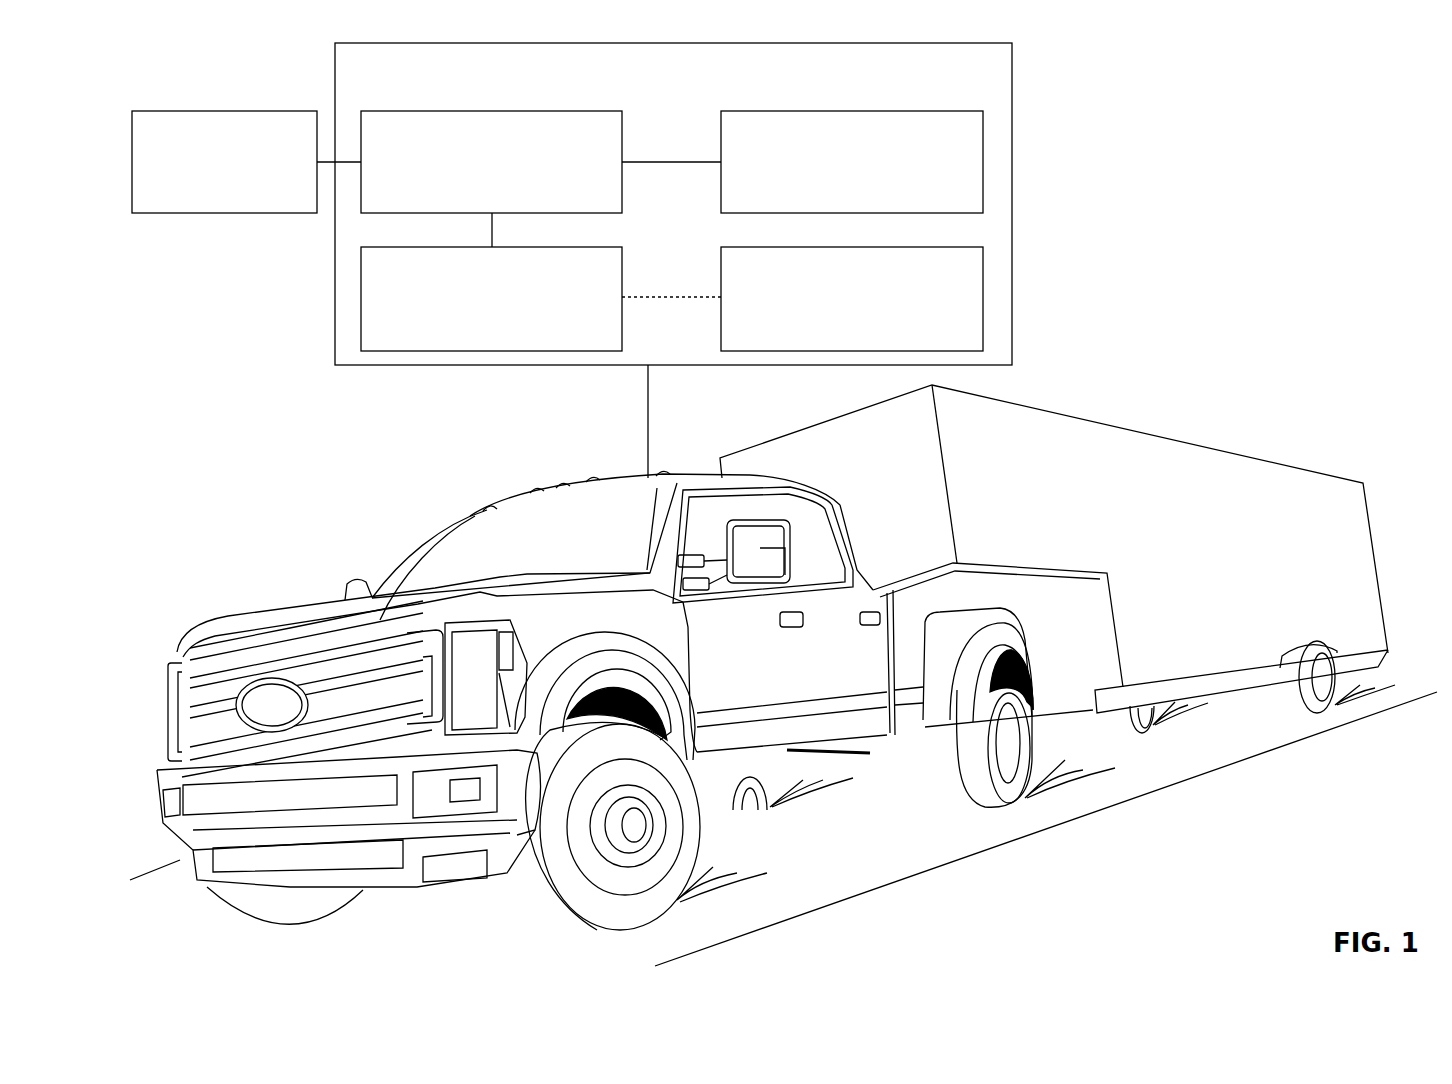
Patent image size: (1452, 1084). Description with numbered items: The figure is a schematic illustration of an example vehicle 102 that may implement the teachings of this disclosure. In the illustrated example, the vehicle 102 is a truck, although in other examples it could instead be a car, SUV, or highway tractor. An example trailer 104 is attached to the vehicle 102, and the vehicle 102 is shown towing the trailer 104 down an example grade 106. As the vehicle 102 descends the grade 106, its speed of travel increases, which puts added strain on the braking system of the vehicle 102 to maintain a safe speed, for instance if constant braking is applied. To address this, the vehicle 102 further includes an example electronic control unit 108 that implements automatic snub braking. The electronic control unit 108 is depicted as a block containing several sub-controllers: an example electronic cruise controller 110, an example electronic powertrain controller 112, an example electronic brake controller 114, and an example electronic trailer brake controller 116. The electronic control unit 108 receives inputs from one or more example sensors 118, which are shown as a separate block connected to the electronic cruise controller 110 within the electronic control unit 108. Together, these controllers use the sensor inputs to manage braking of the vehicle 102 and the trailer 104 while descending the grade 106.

The vehicle 102 is at (487, 508).
The trailer 104 is at (1000, 396).
The grade 106 is at (905, 862).
The electronic control unit 108 is at (673, 260).
The electronic cruise controller 110 is at (491, 162).
The electronic powertrain controller 112 is at (852, 162).
The electronic brake controller 114 is at (491, 299).
The electronic trailer brake controller 116 is at (852, 299).
The sensors 118 is at (246, 162).